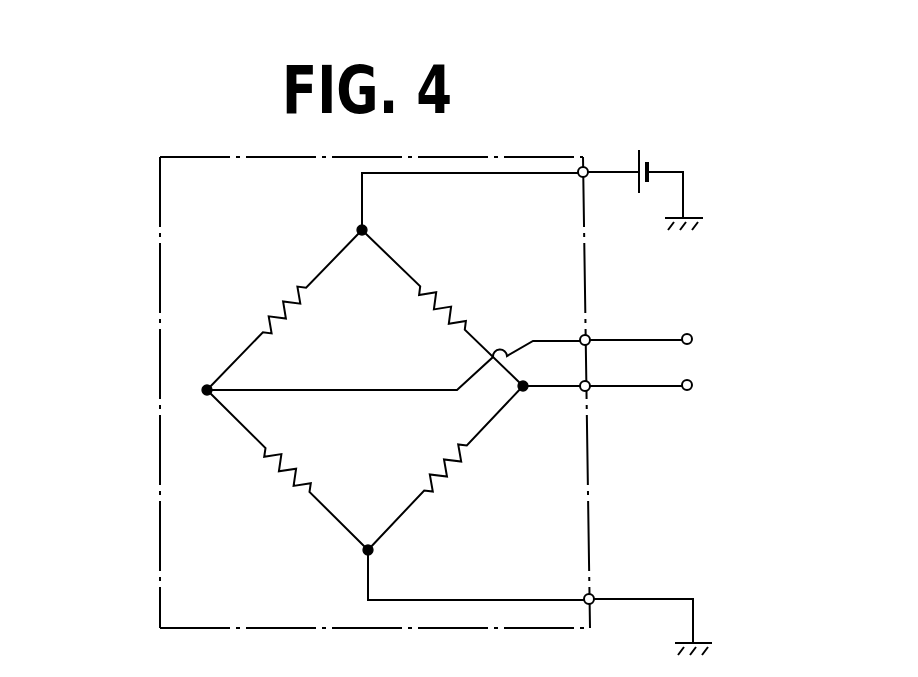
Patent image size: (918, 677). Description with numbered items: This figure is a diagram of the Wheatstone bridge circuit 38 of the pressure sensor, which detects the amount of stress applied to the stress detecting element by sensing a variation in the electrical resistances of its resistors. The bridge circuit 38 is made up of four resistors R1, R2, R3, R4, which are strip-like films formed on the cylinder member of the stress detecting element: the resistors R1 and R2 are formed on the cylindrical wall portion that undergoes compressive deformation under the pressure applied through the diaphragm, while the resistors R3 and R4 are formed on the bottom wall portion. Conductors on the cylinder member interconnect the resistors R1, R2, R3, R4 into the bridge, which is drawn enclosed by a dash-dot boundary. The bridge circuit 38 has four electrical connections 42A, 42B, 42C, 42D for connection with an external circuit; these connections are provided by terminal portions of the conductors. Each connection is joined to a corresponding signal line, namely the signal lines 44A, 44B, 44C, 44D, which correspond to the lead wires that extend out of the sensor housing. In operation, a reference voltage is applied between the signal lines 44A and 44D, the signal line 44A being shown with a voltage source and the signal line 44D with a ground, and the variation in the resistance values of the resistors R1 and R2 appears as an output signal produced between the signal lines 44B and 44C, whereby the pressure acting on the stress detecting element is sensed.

The Wheatstone bridge circuit 38 is at (160, 338).
The resistor R1 is at (284, 292).
The resistor R2 is at (445, 478).
The resistor R3 is at (278, 473).
The resistor R4 is at (441, 298).
The electrical connection 42A is at (586, 168).
The electrical connection 42B is at (590, 336).
The electrical connection 42C is at (589, 391).
The electrical connection 42D is at (594, 596).
The signal line 44A is at (618, 170).
The signal line 44B is at (665, 337).
The signal line 44C is at (665, 388).
The signal line 44D is at (693, 598).